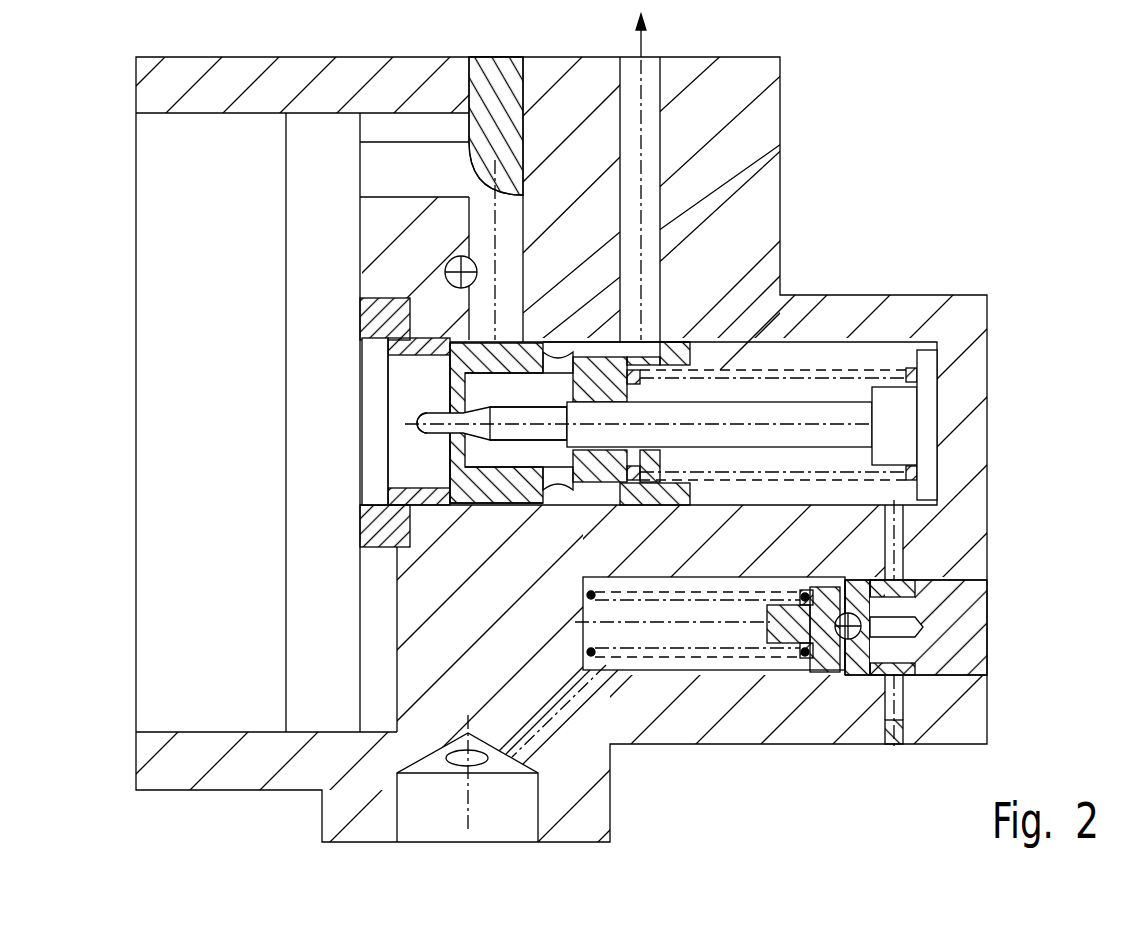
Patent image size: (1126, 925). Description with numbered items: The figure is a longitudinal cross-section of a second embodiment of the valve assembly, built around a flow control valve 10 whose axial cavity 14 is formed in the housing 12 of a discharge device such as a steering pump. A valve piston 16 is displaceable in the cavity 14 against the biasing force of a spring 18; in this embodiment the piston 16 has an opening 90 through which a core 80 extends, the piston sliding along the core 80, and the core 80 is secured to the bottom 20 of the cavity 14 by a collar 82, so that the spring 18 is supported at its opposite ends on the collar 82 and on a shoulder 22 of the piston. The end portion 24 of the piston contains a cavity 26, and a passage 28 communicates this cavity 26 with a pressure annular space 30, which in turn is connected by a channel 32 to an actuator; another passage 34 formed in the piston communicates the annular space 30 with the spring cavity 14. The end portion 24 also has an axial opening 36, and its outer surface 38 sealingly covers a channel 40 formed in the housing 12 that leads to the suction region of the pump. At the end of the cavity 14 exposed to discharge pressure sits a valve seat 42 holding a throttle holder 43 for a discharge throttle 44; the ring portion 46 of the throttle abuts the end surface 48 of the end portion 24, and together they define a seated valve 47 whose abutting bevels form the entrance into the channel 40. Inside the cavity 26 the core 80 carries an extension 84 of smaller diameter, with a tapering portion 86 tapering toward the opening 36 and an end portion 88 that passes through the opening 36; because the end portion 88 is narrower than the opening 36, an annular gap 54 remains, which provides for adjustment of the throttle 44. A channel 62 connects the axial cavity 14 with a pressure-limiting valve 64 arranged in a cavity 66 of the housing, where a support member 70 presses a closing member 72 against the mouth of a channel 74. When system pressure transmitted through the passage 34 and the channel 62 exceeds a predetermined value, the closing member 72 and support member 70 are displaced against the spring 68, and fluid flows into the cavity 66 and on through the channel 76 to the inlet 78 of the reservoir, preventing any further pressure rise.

The flow control valve 10 is at (939, 159).
The housing 12 is at (965, 328).
The axial cavity 14 is at (843, 340).
The valve piston 16 is at (820, 362).
The spring 18 is at (908, 370).
The bottom of the cavity 20 is at (940, 347).
The shoulder 22 is at (655, 372).
The end portion 24 is at (553, 352).
The cavity 26 is at (526, 403).
The passage 28 is at (553, 480).
The pressure annular space 30 is at (595, 347).
The channel 32 is at (648, 120).
The passage 34 is at (640, 483).
The axial opening 36 is at (453, 500).
The outer surface 38 is at (530, 335).
The channel 40 is at (398, 160).
The valve seat 42 is at (360, 303).
The throttle holder 43 is at (368, 322).
The discharge throttle 44 is at (360, 334).
The ring portion 46 is at (437, 345).
The seated valve 47 is at (447, 377).
The end surface 48 is at (407, 422).
The annular gap 54 is at (410, 480).
The channel 62 is at (905, 558).
The pressure-limiting valve 64 is at (960, 650).
The cavity 66 is at (728, 660).
The spring 68 is at (805, 652).
The support member 70 is at (848, 640).
The closing member 72 is at (890, 660).
The channel 74 is at (962, 676).
The channel 76 is at (573, 717).
The inlet of the reservoir 78 is at (433, 815).
The core 80 is at (775, 435).
The collar 82 is at (927, 412).
The extension 84 is at (527, 432).
The tapering portion 86 is at (478, 505).
The end portion 88 is at (447, 438).
The opening 90 is at (592, 483).